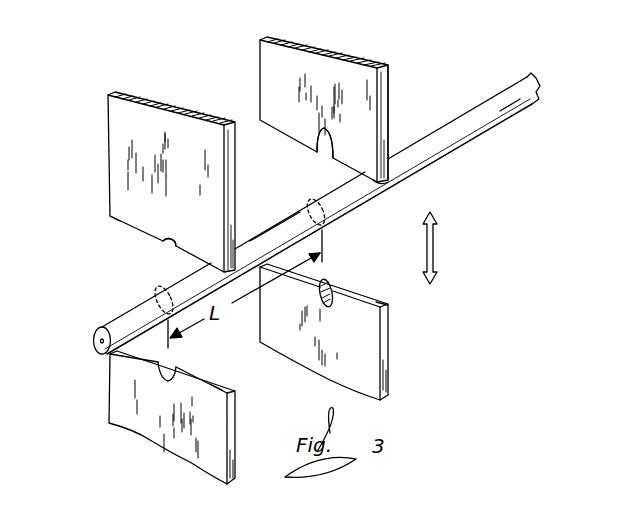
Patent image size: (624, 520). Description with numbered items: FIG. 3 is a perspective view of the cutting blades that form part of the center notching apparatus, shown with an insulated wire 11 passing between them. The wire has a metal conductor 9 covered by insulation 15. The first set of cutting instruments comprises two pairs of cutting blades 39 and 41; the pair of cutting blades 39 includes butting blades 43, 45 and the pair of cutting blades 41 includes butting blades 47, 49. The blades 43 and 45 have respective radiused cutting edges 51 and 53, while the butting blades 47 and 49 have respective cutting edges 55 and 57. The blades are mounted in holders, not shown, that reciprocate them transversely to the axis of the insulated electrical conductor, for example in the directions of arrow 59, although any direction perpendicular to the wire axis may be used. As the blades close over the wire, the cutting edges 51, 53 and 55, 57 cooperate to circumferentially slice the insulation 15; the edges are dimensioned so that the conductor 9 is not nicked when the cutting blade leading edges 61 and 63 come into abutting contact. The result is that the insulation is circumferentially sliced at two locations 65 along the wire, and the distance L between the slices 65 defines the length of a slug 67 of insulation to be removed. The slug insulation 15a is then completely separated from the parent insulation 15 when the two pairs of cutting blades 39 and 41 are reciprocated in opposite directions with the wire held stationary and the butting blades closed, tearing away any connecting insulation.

The conductor 9 is at (94, 341).
The insulated wire 11 is at (511, 106).
The insulation 15 is at (310, 203).
The slug insulation 15a is at (310, 206).
The pair of cutting blades 39 is at (397, 98).
The pair of cutting blades 41 is at (135, 182).
The butting blade 43 is at (353, 96).
The butting blade 45 is at (349, 314).
The butting blade 47 is at (118, 113).
The butting blade 49 is at (146, 407).
The radiused cutting edge 51 is at (318, 150).
The radiused cutting edge 53 is at (328, 281).
The cutting edge 55 is at (165, 243).
The cutting edge 57 is at (172, 372).
The arrow 59 is at (432, 247).
The cutting blade leading edge 61 is at (382, 181).
The cutting blade leading edge 63 is at (110, 218).
The slices 65 is at (160, 288).
The slug 67 is at (277, 229).